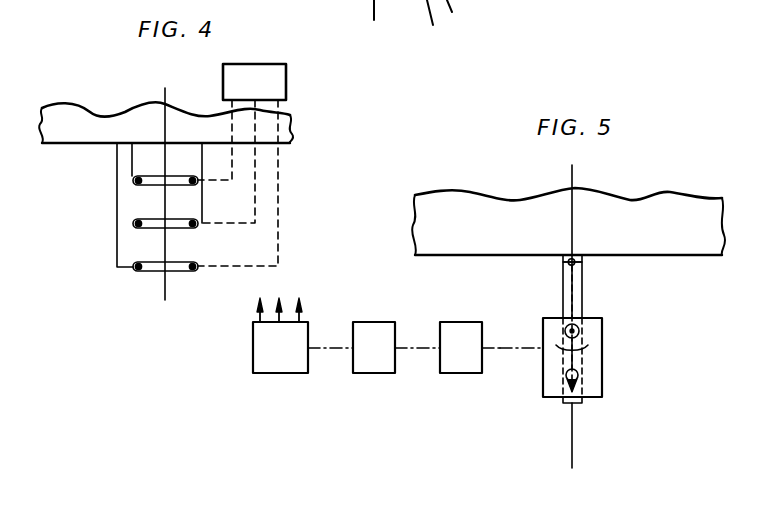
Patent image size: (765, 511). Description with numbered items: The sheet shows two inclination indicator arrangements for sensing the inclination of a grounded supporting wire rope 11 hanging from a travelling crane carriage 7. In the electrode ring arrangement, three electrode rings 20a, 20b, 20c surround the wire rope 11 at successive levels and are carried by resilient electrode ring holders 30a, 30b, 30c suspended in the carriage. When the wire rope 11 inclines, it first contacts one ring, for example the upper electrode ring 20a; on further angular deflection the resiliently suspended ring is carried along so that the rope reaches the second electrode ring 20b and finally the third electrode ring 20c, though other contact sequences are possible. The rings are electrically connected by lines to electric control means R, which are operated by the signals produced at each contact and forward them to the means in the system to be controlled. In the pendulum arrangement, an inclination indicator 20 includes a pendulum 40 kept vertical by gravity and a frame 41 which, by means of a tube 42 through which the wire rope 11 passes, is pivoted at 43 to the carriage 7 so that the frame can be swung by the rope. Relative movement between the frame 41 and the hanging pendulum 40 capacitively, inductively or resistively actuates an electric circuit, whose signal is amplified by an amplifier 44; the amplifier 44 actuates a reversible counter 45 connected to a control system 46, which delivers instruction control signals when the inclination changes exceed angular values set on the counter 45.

In FIG. 4, the carriage 7 is at (166, 122).
In FIG. 5, the carriage 7 is at (641, 214).
In FIG. 5, the wire rope 11 is at (573, 430).
In FIG. 4, the inclination indicator 20 is at (215, 201).
In FIG. 5, the inclination indicator 20 is at (600, 330).
In FIG. 4, the upper electrode ring 20a is at (152, 185).
In FIG. 4, the second electrode ring 20b is at (150, 228).
In FIG. 4, the third electrode ring 20c is at (155, 271).
In FIG. 4, the electrode ring holder 30a is at (132, 162).
In FIG. 4, the electrode ring holder 30b is at (202, 164).
In FIG. 4, the electrode ring holder 30c is at (117, 210).
In FIG. 5, the pendulum 40 is at (586, 352).
In FIG. 5, the frame 41 is at (593, 380).
In FIG. 5, the tube 42 is at (582, 293).
In FIG. 5, the pivot 43 is at (582, 262).
In FIG. 5, the amplifier 44 is at (461, 347).
In FIG. 5, the counter 45 is at (374, 347).
In FIG. 5, the control system 46 is at (280, 335).
In FIG. 4, the electric control means R is at (254, 82).